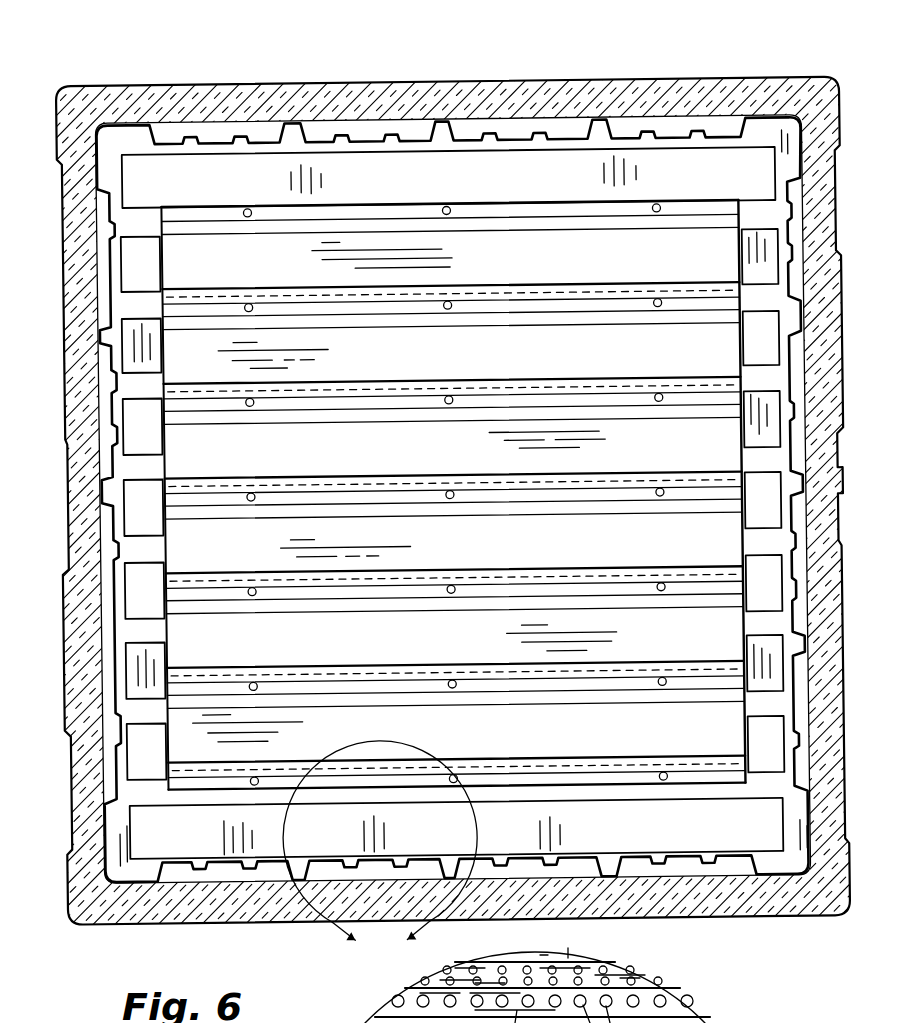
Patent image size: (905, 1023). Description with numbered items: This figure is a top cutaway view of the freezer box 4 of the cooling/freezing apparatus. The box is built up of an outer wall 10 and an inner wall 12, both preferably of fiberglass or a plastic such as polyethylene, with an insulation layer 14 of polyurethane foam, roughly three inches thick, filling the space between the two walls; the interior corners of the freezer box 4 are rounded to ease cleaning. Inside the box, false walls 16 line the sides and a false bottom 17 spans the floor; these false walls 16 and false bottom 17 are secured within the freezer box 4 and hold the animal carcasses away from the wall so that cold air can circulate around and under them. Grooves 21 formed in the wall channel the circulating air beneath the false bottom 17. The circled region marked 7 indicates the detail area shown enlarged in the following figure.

The freezer box 4 is at (76, 568).
The detail area of FIG. 7 is at (380, 863).
The outer wall 10 is at (263, 95).
The inner wall 12 is at (456, 133).
The insulation layer 14 is at (380, 96).
The false walls 16 is at (120, 251).
The false bottom 17 is at (335, 458).
The grooves 21 is at (755, 224).